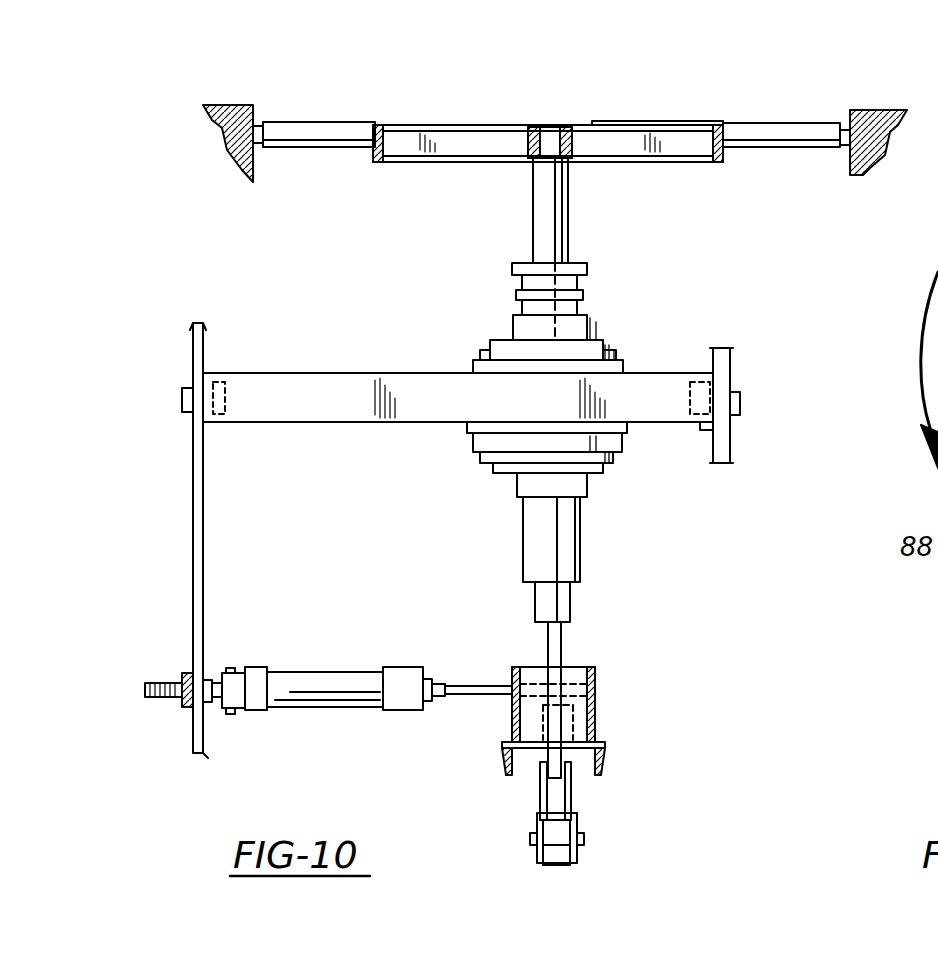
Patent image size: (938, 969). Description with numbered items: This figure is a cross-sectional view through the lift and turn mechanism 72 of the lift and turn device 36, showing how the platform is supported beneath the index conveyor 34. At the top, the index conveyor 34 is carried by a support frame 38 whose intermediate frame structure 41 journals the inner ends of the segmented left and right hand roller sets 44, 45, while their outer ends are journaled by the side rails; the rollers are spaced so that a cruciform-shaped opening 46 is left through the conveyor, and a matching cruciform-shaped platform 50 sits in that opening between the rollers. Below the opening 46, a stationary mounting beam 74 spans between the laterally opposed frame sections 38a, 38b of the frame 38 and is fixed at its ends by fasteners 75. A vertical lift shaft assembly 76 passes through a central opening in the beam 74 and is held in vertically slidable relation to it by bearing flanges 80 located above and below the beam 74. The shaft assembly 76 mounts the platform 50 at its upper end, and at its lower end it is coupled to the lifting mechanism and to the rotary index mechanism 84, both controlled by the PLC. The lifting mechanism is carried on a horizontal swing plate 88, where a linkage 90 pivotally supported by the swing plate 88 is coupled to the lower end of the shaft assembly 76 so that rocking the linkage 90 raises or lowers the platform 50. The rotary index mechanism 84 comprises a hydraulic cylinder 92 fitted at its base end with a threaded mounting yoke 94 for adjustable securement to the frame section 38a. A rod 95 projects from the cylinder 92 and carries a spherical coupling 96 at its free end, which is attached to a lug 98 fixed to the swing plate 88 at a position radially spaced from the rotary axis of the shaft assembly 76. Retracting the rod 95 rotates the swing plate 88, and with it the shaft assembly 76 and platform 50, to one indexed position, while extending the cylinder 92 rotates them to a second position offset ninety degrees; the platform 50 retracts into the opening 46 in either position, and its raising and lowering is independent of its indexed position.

The index conveyor 34 is at (812, 114).
The lift and turn device 36 is at (657, 113).
The support frame 38 is at (887, 108).
The frame section 38a is at (193, 545).
The frame section 38b is at (735, 452).
The intermediate frame structure 41 is at (375, 165).
The left hand roller set 44 is at (763, 120).
The right hand roller set 45 is at (318, 125).
The cruciform-shaped opening 46 is at (518, 126).
The cruciform-shaped platform 50 is at (420, 128).
The lift and turn mechanism 72 is at (703, 326).
The stationary mounting beam 74 is at (390, 372).
The fasteners 75 is at (183, 395).
The vertical lift shaft assembly 76 is at (587, 207).
The bearing flanges 80 is at (600, 345).
The rotary index mechanism 84 is at (340, 653).
The horizontal swing plate 88 is at (605, 745).
The linkage 90 is at (597, 835).
The hydraulic cylinder 92 is at (310, 710).
The threaded mounting yoke 94 is at (222, 672).
The rod 95 is at (490, 683).
The spherical coupling 96 is at (600, 695).
The lug 98 is at (595, 727).